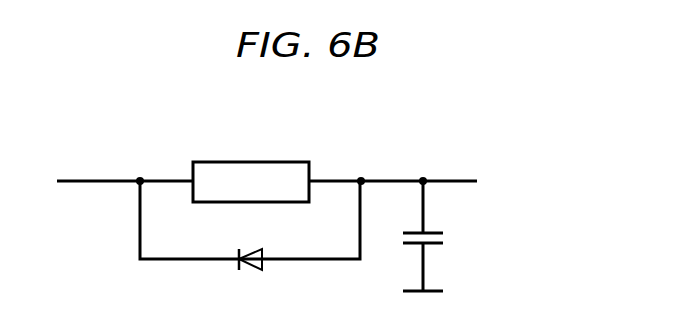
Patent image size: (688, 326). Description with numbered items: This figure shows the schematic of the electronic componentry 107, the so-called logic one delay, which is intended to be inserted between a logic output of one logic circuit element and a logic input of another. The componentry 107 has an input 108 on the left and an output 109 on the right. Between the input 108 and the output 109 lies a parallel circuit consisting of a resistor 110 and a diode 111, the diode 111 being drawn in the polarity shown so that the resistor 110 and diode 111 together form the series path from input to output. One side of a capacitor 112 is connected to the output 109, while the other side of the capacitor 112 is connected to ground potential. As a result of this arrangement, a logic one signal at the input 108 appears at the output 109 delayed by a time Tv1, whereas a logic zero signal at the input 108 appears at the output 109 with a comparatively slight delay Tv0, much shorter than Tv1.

The electronic componentry 107 is at (187, 112).
The input 108 is at (100, 181).
The output 109 is at (458, 181).
The resistor 110 is at (267, 162).
The diode 111 is at (252, 270).
The capacitor 112 is at (440, 240).